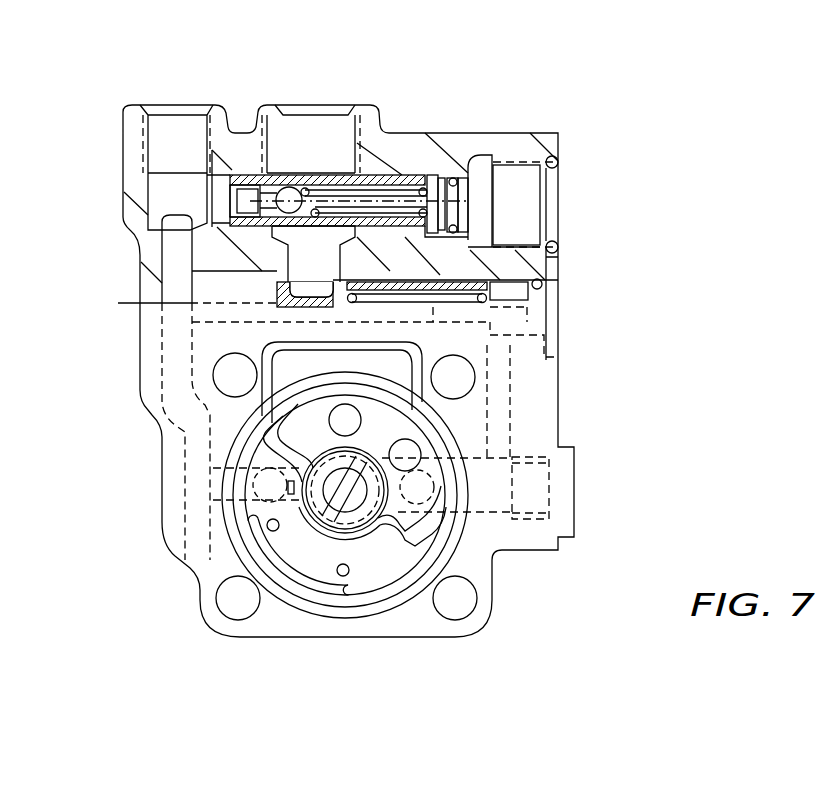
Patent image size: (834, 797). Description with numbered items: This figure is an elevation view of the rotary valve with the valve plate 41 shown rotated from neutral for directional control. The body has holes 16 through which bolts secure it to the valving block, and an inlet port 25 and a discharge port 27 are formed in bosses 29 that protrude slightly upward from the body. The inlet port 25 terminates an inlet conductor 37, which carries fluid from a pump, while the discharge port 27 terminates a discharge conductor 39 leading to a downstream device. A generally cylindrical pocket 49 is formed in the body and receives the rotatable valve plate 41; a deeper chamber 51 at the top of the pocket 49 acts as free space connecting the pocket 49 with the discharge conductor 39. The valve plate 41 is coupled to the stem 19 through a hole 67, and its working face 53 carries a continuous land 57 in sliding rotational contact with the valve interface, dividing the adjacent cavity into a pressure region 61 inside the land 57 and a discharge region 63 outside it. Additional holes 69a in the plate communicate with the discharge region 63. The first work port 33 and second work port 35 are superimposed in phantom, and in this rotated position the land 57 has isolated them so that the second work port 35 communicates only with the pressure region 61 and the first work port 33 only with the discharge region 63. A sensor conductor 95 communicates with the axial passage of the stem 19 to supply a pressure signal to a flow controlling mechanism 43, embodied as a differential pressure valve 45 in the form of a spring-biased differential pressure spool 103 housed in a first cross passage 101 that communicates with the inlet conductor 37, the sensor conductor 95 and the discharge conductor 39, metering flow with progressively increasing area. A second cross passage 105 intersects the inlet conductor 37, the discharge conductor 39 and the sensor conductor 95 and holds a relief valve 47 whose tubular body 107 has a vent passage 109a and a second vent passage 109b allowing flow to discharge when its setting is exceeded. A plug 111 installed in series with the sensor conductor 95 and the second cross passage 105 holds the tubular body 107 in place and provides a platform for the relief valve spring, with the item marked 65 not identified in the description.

The holes 16 is at (233, 598).
The stem 19 is at (385, 560).
The inlet port 25 is at (177, 108).
The discharge port 27 is at (311, 140).
The bosses 29 is at (147, 150).
The first work port 33 is at (300, 500).
The second work port 35 is at (425, 489).
The inlet conductor 37 is at (170, 250).
The discharge conductor 39 is at (340, 258).
The valve plate 41 is at (417, 557).
The flow controlling mechanism 43 is at (253, 268).
The differential pressure valve 45 is at (350, 282).
The relief valve 47 is at (367, 170).
The pocket 49 is at (305, 600).
The chamber 51 is at (478, 366).
The working face 53 is at (353, 520).
The continuous land 57 is at (440, 442).
The pressure region 61 is at (387, 430).
The discharge region 63 is at (445, 547).
The port hole 65 is at (345, 588).
The hole 67 is at (300, 505).
The additional holes 69a is at (296, 517).
The sensor conductor 95 is at (475, 487).
The first cross passage 101 is at (205, 317).
The differential pressure spool 103 is at (273, 288).
The second cross passage 105 is at (222, 203).
The tubular body 107 is at (238, 168).
The vent passage 109a is at (300, 172).
The second vent passage 109b is at (330, 175).
The plug 111 is at (522, 183).